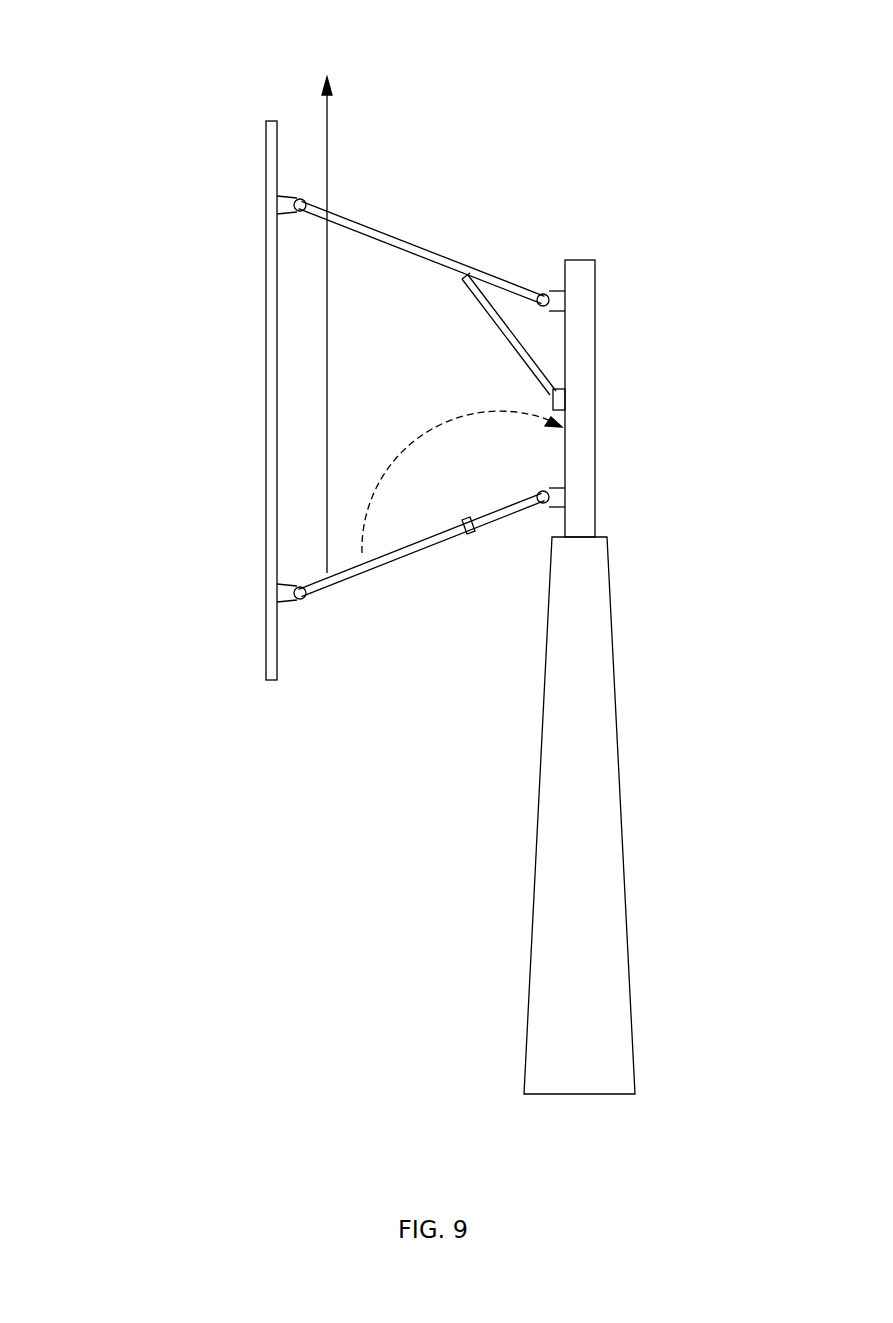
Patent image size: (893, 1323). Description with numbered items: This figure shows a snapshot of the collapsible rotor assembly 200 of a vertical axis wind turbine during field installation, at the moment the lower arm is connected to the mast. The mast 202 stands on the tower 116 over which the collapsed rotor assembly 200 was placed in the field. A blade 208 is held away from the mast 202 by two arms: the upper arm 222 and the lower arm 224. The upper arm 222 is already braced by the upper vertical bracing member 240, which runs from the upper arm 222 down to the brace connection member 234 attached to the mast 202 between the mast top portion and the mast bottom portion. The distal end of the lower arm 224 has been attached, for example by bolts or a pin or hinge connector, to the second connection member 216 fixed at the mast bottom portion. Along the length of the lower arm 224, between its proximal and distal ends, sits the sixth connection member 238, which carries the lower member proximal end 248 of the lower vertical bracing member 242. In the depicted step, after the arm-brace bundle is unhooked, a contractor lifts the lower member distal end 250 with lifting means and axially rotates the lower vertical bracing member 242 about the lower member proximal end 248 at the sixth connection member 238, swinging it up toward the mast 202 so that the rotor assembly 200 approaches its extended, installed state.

The rotor assembly 200 is at (152, 58).
The blade 208 is at (247, 293).
The mast 202 is at (607, 455).
The tower 116 is at (604, 966).
The upper arm 222 is at (405, 241).
The upper vertical bracing member 240 is at (553, 333).
The brace connection member 234 is at (562, 397).
The lower arm 224 is at (484, 561).
The lower member distal end 250 is at (322, 588).
The second connection member 216 is at (562, 497).
The lower vertical bracing member 242 is at (430, 520).
The sixth connection member 238 is at (472, 528).
The lower member proximal end 248 is at (440, 540).